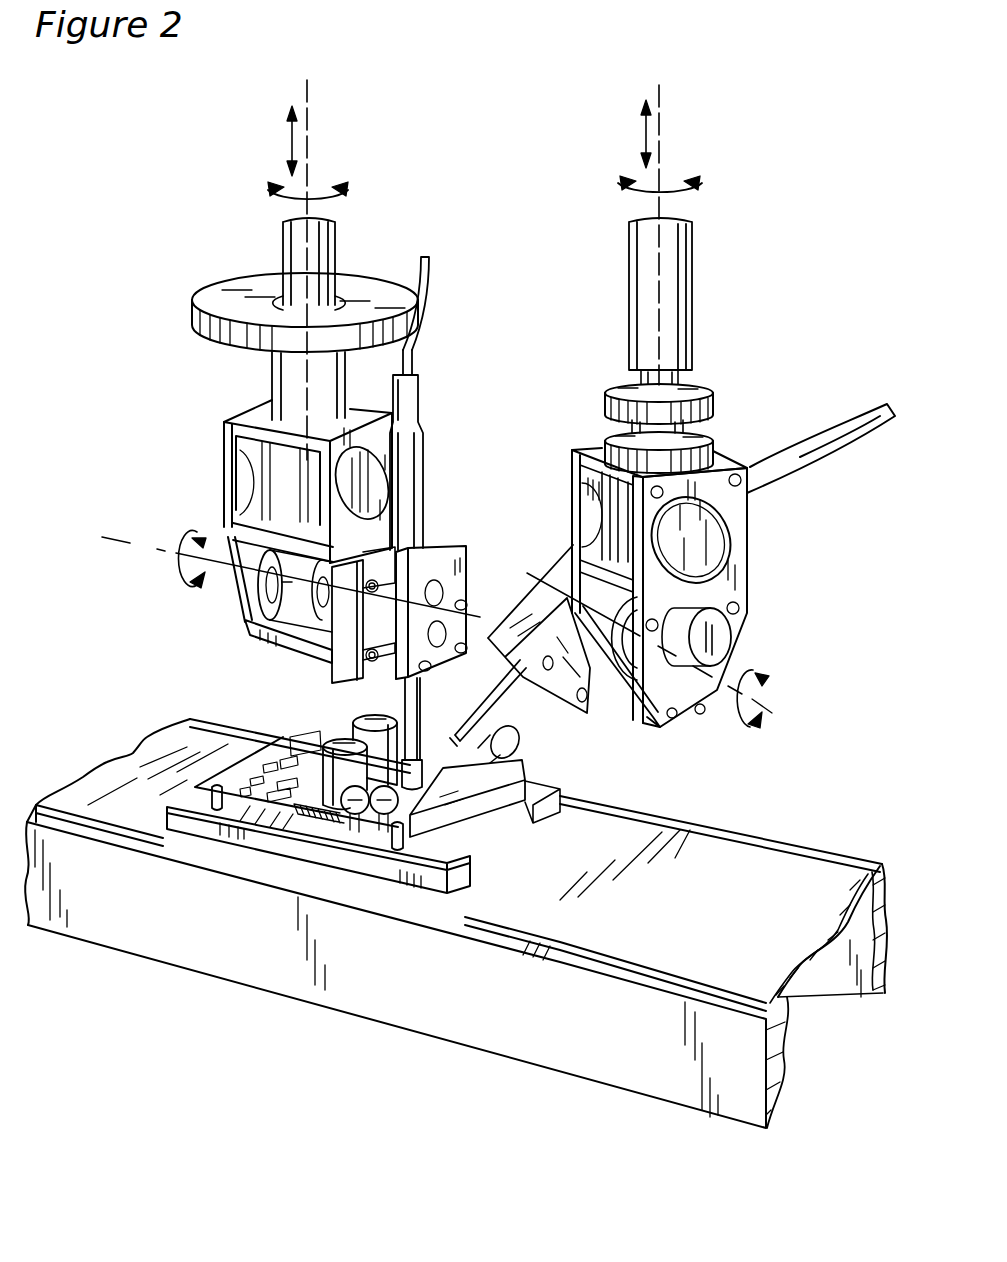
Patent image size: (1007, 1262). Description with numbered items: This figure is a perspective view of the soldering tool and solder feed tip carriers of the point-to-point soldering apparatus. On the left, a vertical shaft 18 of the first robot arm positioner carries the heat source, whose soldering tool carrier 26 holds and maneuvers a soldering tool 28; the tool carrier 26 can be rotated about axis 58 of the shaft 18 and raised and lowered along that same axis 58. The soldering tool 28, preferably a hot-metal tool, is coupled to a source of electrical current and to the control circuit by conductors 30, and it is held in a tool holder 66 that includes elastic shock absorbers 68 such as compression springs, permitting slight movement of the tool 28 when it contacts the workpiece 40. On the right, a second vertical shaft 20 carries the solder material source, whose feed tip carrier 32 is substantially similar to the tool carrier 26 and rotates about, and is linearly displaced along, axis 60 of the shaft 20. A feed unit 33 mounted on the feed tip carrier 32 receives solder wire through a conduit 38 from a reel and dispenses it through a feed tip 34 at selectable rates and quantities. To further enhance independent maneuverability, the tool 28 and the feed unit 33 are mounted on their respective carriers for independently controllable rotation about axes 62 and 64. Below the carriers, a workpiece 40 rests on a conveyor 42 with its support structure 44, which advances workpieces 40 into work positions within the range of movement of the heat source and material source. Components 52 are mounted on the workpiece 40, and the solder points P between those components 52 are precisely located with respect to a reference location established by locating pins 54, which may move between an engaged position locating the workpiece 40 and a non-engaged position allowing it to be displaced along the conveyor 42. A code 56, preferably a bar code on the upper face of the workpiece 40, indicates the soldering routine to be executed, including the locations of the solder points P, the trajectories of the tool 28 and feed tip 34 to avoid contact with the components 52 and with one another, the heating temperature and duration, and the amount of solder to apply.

The vertical shaft 18 is at (298, 254).
The vertical shaft 20 is at (687, 323).
The soldering tool carrier 26 is at (225, 457).
The soldering tool 28 is at (430, 732).
The conductors 30 is at (427, 283).
The feed tip carrier 32 is at (747, 513).
The feed unit 33 is at (592, 705).
The feed tip 34 is at (478, 721).
The conduit 38 is at (800, 450).
The workpiece 40 is at (467, 835).
The conveyor 42 is at (597, 940).
The support structure 44 is at (673, 1086).
The components 52 is at (357, 795).
The locating pins 54 is at (215, 808).
The code 56 is at (300, 818).
The axis 58 is at (310, 157).
The axis 60 is at (663, 178).
The axis 62 is at (128, 547).
The axis 64 is at (773, 681).
The tool holder 66 is at (438, 537).
The elastic shock absorbers 68 is at (440, 592).
The solder points P is at (507, 761).